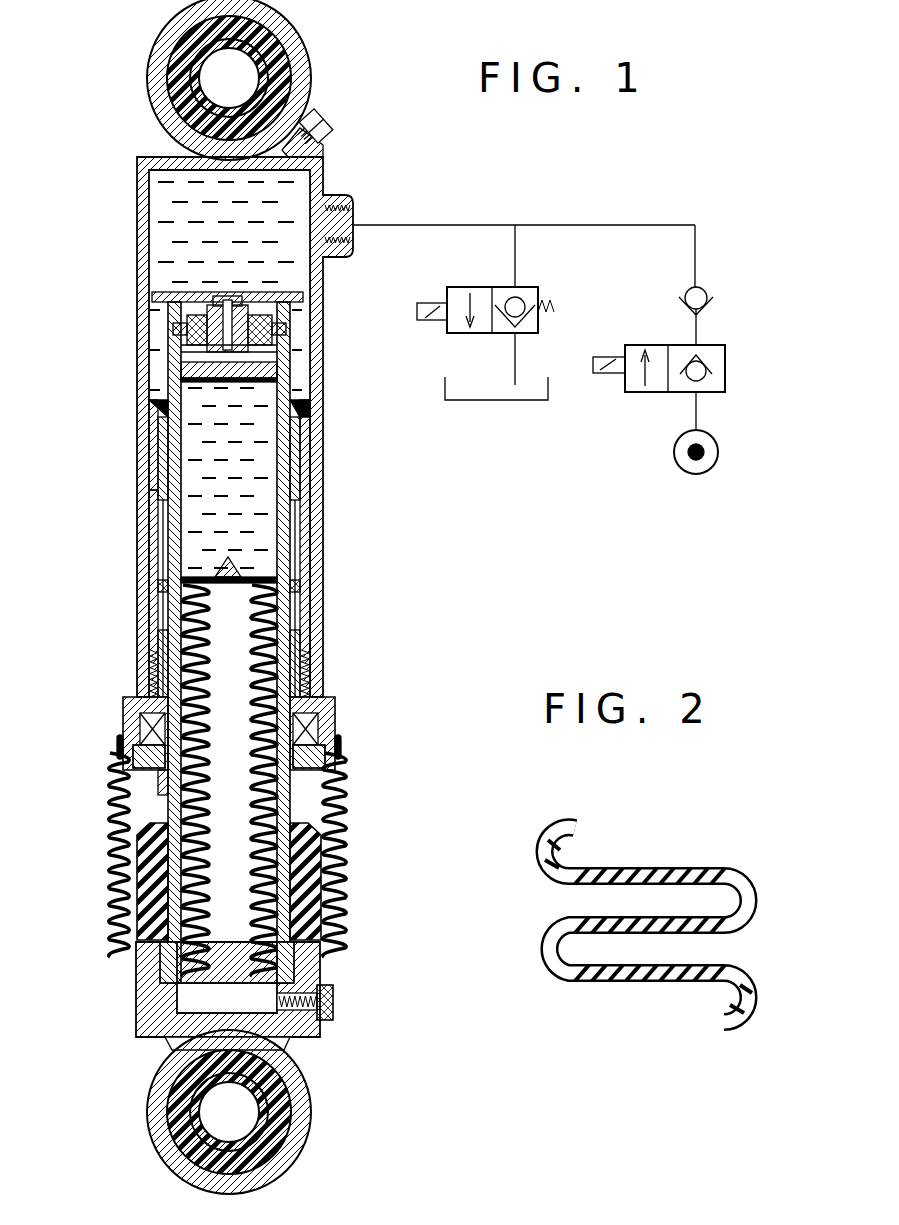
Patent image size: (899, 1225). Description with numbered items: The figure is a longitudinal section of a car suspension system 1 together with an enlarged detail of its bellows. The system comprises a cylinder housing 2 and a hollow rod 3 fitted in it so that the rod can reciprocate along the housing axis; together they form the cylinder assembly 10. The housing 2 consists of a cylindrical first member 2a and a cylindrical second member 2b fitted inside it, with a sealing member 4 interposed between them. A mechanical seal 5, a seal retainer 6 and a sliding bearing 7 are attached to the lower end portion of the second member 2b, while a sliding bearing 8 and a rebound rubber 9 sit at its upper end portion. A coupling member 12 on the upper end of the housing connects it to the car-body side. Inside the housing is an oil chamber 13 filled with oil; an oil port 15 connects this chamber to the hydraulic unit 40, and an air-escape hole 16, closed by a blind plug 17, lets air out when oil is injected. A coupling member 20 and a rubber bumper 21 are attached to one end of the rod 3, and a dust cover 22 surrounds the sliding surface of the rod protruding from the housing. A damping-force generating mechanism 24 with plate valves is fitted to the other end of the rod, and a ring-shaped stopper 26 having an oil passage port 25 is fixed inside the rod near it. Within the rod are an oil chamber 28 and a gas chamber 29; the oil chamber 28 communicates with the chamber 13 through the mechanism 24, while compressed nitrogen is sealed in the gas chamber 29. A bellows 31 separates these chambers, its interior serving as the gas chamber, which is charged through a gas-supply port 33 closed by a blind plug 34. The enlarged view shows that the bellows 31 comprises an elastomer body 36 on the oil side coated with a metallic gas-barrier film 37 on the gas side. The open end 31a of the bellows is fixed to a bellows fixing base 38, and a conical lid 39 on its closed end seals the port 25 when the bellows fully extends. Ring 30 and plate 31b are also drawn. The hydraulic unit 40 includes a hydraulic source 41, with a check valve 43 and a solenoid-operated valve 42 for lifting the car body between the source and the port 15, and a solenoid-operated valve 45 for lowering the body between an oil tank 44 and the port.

In FIG. 1, the car suspension system 1 is at (410, 550).
In FIG. 1, the cylinder housing 2 is at (324, 505).
In FIG. 1, the first member 2a is at (136, 472).
In FIG. 1, the second member 2b is at (158, 514).
In FIG. 1, the hollow rod 3 is at (283, 612).
In FIG. 1, the sealing member 4 is at (298, 584).
In FIG. 1, the mechanical seal 5 is at (308, 718).
In FIG. 1, the seal retainer 6 is at (330, 757).
In FIG. 1, the sliding bearing 7 is at (294, 638).
In FIG. 1, the sliding bearing 8 is at (297, 446).
In FIG. 1, the rebound rubber 9 is at (308, 406).
In FIG. 1, the cylinder assembly 10 is at (340, 522).
In FIG. 1, the coupling member 12 is at (316, 46).
In FIG. 1, the oil chamber 13 is at (150, 199).
In FIG. 1, the oil port 15 is at (352, 215).
In FIG. 1, the air-escape hole 16 is at (322, 163).
In FIG. 1, the blind plug 17 is at (330, 131).
In FIG. 1, the coupling member 20 is at (316, 1106).
In FIG. 1, the rubber bumper 21 is at (300, 862).
In FIG. 1, the dust cover 22 is at (346, 796).
In FIG. 1, the damping-force generating mechanism 24 is at (300, 300).
In FIG. 1, the oil passage port 25 is at (210, 388).
In FIG. 1, the ring-shaped stopper 26 is at (284, 370).
In FIG. 1, the oil chamber 28 is at (190, 442).
In FIG. 2, the oil chamber 28 is at (565, 995).
In FIG. 1, the gas chamber 29 is at (218, 655).
In FIG. 2, the gas chamber 29 is at (758, 995).
In FIG. 1, the stopper ring 30 is at (215, 610).
In FIG. 1, the bellows 31 is at (300, 672).
In FIG. 2, the bellows 31 is at (708, 835).
In FIG. 1, the open end 31a is at (166, 990).
In FIG. 1, the partition plate 31b is at (180, 578).
In FIG. 1, the gas-supply port 33 is at (318, 998).
In FIG. 1, the blind plug 34 is at (334, 1010).
In FIG. 1, the elastomer body 36 is at (168, 792).
In FIG. 2, the elastomer body 36 is at (584, 888).
In FIG. 1, the metallic gas-barrier film 37 is at (205, 772).
In FIG. 2, the metallic gas-barrier film 37 is at (643, 868).
In FIG. 1, the bellows fixing base 38 is at (168, 954).
In FIG. 1, the lid 39 is at (206, 564).
In FIG. 1, the hydraulic unit 40 is at (625, 212).
In FIG. 1, the hydraulic source 41 is at (720, 462).
In FIG. 1, the solenoid-operated valve 42 is at (722, 332).
In FIG. 1, the check valve 43 is at (712, 290).
In FIG. 1, the oil tank 44 is at (528, 404).
In FIG. 1, the solenoid-operated valve 45 is at (542, 282).